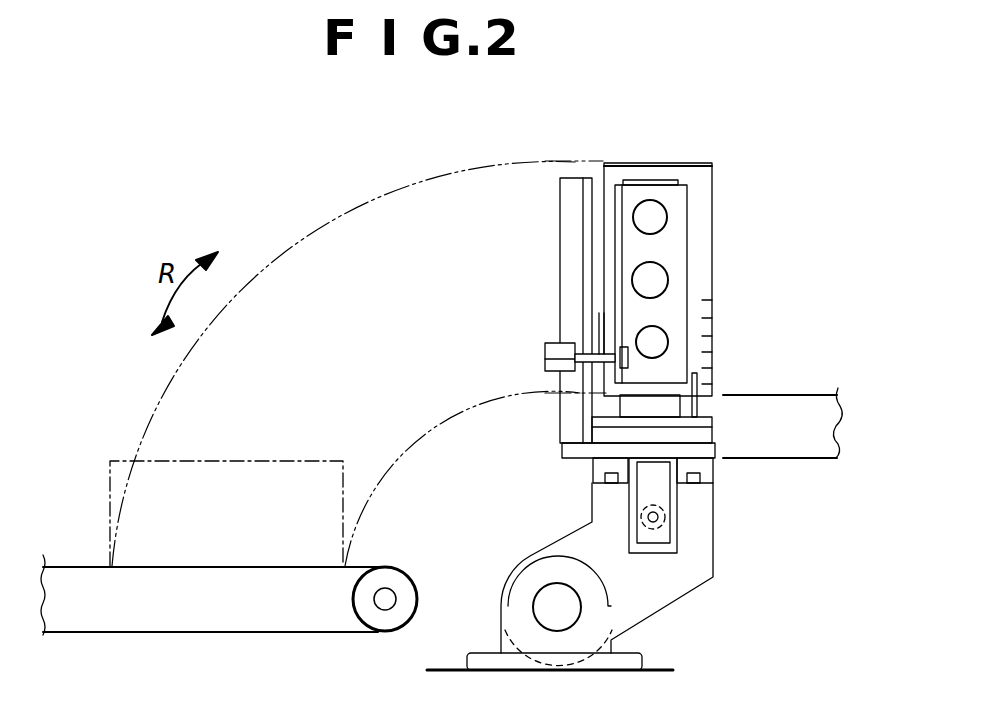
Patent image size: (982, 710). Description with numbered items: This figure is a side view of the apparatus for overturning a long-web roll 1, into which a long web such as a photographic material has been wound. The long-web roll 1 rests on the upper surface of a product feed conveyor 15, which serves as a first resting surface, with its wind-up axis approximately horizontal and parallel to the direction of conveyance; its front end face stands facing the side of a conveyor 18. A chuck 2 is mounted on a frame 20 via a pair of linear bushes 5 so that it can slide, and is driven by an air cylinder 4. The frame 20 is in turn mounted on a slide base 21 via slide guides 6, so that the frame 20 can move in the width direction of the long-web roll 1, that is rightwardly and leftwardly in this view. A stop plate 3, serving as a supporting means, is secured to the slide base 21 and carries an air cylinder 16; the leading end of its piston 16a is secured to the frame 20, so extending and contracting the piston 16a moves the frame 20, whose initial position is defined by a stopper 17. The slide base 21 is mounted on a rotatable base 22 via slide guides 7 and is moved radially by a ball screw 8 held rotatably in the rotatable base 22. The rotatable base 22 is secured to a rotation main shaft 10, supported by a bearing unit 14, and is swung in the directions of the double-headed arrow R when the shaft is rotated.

The long-web roll 1 is at (220, 460).
The chuck 2 is at (640, 180).
The stop plate 3 is at (567, 177).
The air cylinder 4 is at (668, 284).
The linear bush 5 is at (668, 215).
The slide guide 6 is at (680, 410).
The slide guide 7 is at (593, 470).
The ball screw 8 is at (660, 517).
The rotation main shaft 10 is at (548, 606).
The bearing unit 14 is at (638, 657).
The product feed conveyor 15 is at (819, 394).
The air cylinder 16 is at (545, 358).
The piston 16a is at (600, 322).
The stopper 17 is at (697, 385).
The conveyor 18 is at (78, 567).
The frame 20 is at (692, 196).
The slide base 21 is at (712, 434).
The rotatable base 22 is at (676, 586).